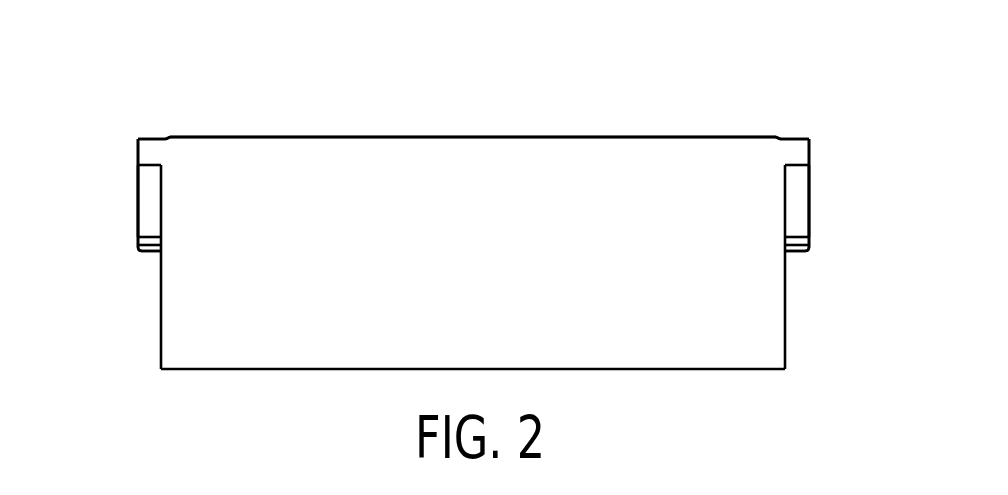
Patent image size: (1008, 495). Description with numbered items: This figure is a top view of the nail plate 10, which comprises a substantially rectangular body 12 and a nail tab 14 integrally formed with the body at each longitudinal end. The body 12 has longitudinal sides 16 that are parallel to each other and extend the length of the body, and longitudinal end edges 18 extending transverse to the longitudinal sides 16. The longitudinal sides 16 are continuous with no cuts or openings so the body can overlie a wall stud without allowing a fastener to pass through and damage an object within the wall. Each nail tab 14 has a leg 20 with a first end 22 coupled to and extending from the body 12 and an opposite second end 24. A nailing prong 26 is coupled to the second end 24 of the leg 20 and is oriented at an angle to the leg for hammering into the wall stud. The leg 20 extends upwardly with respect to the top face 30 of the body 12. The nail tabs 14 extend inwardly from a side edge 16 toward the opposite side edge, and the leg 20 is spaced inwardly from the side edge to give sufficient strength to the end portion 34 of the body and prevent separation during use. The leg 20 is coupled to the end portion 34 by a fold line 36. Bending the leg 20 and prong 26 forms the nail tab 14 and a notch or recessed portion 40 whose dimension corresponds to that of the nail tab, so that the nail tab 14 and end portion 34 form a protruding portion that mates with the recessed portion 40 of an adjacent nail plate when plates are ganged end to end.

The nail plate 10 is at (512, 112).
The body 12 is at (274, 134).
The nail tab 14 is at (137, 207).
The longitudinal sides 16 is at (597, 136).
The longitudinal end edges 18 is at (137, 157).
The leg 20 is at (152, 187).
The first end 22 is at (151, 168).
The second end 24 is at (148, 222).
The nailing prong 26 is at (147, 252).
The top face 30 is at (708, 343).
The end portion 34 is at (150, 154).
The fold line 36 is at (148, 181).
The recessed portion 40 is at (150, 343).